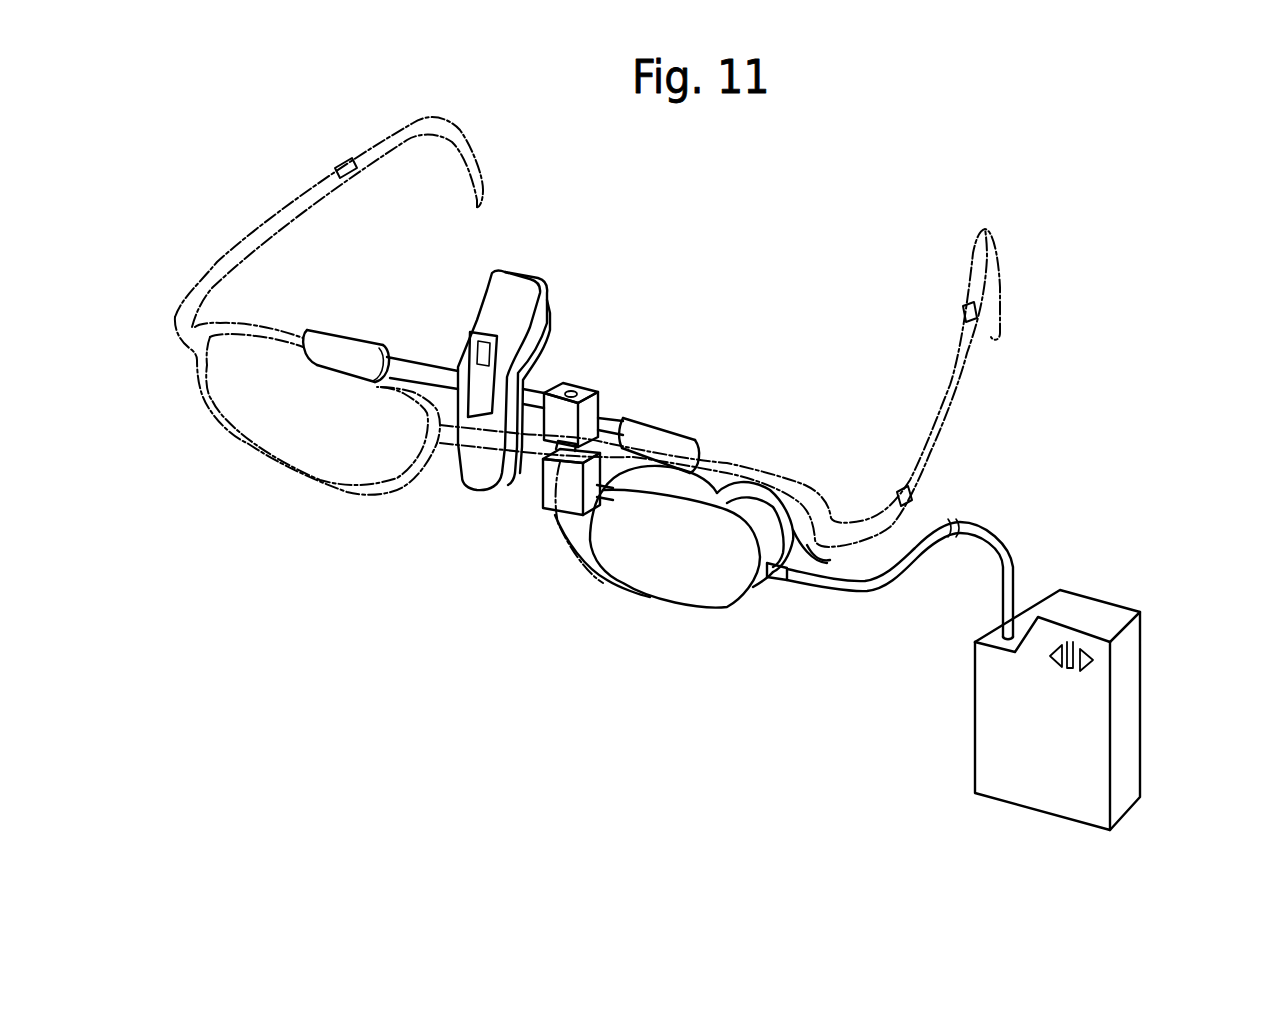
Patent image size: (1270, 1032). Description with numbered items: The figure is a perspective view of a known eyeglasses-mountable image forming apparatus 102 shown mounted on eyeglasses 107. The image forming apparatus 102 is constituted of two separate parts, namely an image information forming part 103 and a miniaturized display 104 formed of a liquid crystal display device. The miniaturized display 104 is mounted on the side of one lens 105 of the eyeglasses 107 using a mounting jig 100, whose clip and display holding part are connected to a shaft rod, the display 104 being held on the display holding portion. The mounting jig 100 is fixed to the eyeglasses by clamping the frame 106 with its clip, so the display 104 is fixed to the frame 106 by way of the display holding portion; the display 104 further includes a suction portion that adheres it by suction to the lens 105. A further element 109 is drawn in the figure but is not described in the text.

The mounting jig 100 is at (470, 483).
The image forming apparatus 102 is at (335, 660).
The image information forming part 103 is at (1133, 740).
The miniaturized display 104 is at (627, 573).
The lens 105 is at (770, 470).
The frame 106 is at (573, 384).
The eyeglasses 107 is at (776, 272).
The cable connector 109 is at (813, 540).